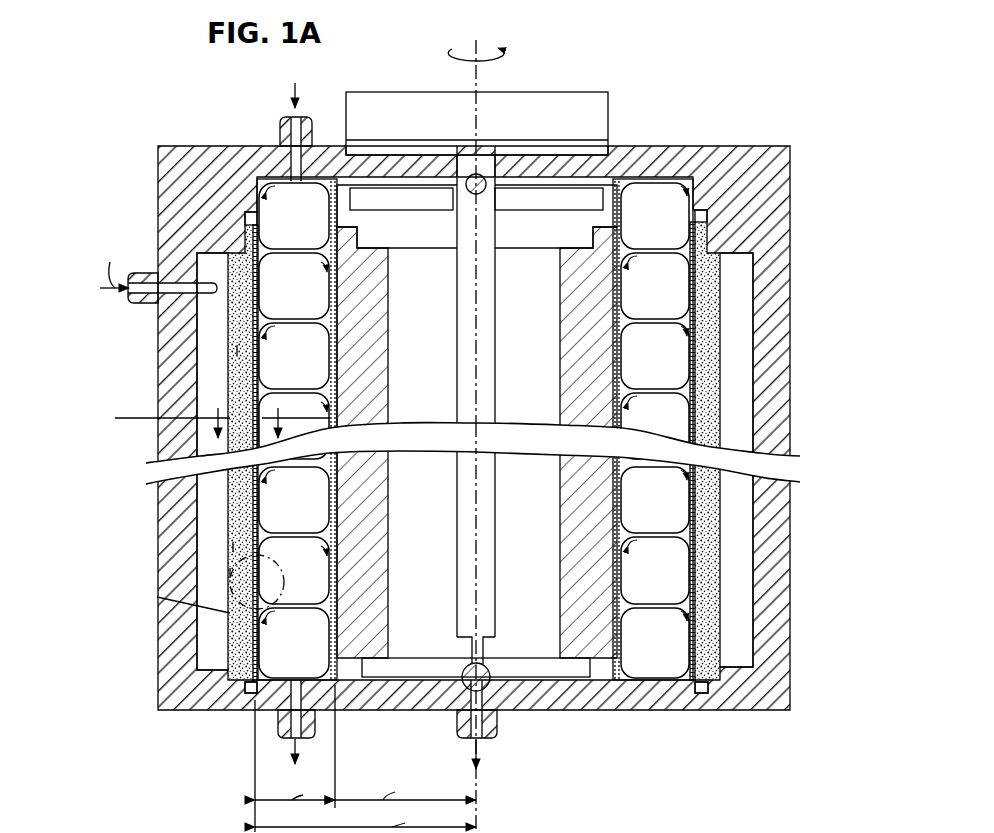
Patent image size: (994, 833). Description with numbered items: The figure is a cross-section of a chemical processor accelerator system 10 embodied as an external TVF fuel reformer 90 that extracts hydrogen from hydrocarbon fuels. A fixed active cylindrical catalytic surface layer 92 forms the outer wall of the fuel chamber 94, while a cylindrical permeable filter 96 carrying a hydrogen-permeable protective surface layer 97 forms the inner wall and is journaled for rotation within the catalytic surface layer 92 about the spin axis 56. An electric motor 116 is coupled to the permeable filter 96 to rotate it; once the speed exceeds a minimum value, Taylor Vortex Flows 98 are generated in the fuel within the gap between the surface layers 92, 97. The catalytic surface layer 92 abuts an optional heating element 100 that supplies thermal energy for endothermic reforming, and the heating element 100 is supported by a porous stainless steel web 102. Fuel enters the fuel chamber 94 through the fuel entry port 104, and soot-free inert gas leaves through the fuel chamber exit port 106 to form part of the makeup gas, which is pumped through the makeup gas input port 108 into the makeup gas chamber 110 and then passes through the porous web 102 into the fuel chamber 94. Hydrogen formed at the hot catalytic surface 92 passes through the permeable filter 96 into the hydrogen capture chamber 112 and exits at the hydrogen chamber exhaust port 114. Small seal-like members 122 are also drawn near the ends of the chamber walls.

The chemical processor accelerator system 10 is at (633, 110).
The TVF fuel reformer 90 is at (681, 140).
The electric motor 116 is at (378, 92).
The spin axis 56 is at (475, 63).
The fuel entry port 104 is at (288, 113).
The fuel chamber exit port 106 is at (295, 740).
The hydrogen chamber exhaust port 114 is at (492, 745).
The makeup gas input port 108 is at (135, 300).
The makeup gas chamber 110 is at (217, 517).
The Taylor Vortex Flows 98 is at (258, 315).
The protective surface layer 97 is at (697, 322).
The heating element 100 is at (237, 350).
The catalytic surface layer 92 is at (233, 547).
The stainless steel web 102 is at (230, 573).
The fuel chamber 94 is at (285, 367).
The cylindrical permeable filter 96 is at (598, 294).
The hydrogen capture chamber 112 is at (413, 485).
The seal 122 is at (245, 220).